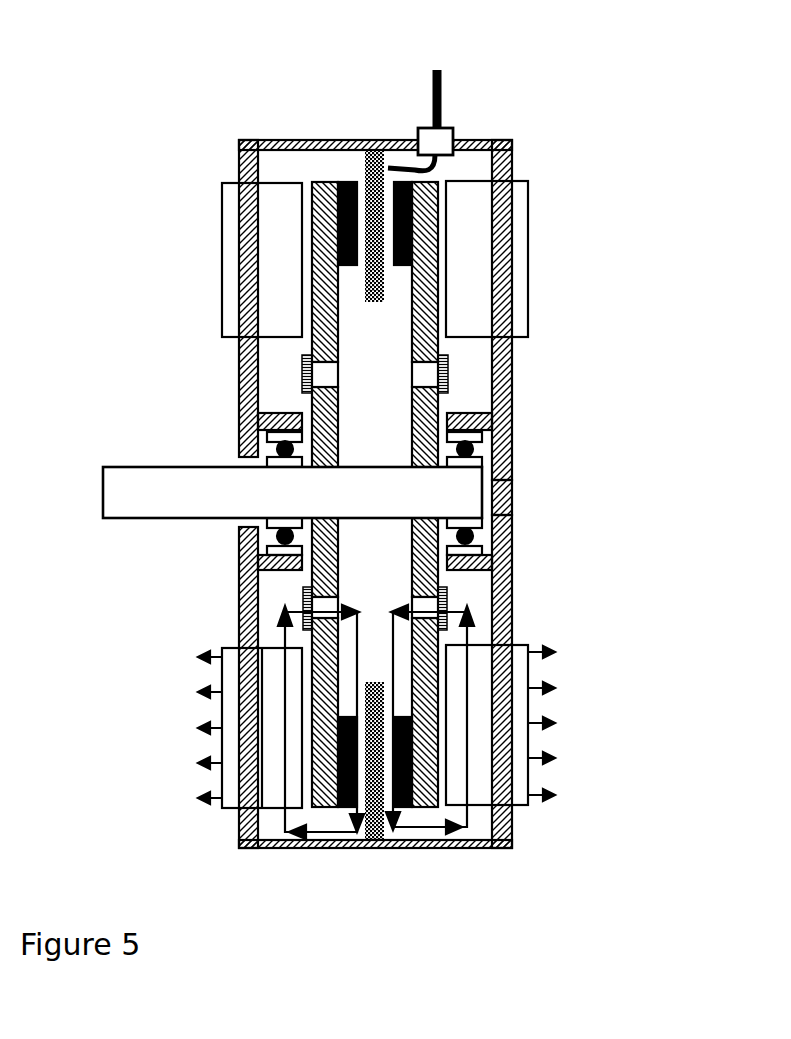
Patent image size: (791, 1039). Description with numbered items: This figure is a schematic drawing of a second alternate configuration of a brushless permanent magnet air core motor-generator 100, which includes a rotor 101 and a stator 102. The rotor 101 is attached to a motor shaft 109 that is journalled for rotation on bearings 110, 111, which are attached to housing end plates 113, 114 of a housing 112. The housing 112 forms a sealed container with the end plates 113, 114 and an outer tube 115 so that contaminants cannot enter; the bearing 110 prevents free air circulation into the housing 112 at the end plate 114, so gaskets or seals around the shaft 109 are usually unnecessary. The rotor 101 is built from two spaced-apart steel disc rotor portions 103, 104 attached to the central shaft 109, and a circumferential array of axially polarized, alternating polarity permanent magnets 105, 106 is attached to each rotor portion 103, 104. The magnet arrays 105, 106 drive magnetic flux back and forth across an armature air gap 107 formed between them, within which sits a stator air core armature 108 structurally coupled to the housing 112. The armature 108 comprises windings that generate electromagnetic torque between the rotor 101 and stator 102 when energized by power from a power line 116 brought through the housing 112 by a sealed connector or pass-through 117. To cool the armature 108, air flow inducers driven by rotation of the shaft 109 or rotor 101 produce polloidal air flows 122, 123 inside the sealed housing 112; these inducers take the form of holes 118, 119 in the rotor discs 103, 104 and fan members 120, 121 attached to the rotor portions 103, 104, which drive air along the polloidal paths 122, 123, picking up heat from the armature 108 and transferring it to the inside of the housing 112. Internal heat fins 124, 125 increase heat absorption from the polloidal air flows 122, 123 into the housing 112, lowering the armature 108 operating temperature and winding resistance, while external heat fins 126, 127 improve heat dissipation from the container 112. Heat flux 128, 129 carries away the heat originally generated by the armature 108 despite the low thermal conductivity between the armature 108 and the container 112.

The brushless permanent magnet air core motor-generator 100 is at (141, 46).
The rotor 101 is at (468, 400).
The stator 102 is at (362, 140).
The rotor portion 103 is at (440, 182).
The rotor portion 104 is at (313, 182).
The permanent magnets 105 is at (413, 218).
The permanent magnets 106 is at (338, 218).
The armature air gap 107 is at (356, 280).
The stator air core armature 108 is at (377, 301).
The motor shaft 109 is at (143, 465).
The bearing 110 is at (278, 445).
The bearing 111 is at (473, 444).
The housing 112 is at (518, 497).
The housing end plate 113 is at (512, 533).
The housing end plate 114 is at (237, 557).
The outer tube 115 is at (477, 846).
The power line 116 is at (443, 80).
The sealed connector or pass-through 117 is at (452, 128).
The holes 118 is at (344, 376).
The holes 119 is at (410, 370).
The fan member 120 is at (449, 375).
The fan member 121 is at (302, 373).
The polloidal air flow 122 is at (463, 635).
The polloidal air flow 123 is at (283, 640).
The internal heat fin 124 is at (480, 800).
The internal heat fin 125 is at (275, 800).
The external heat fin 126 is at (230, 810).
The external heat fin 127 is at (530, 668).
The heat flux 128 is at (532, 762).
The heat flux 129 is at (208, 762).